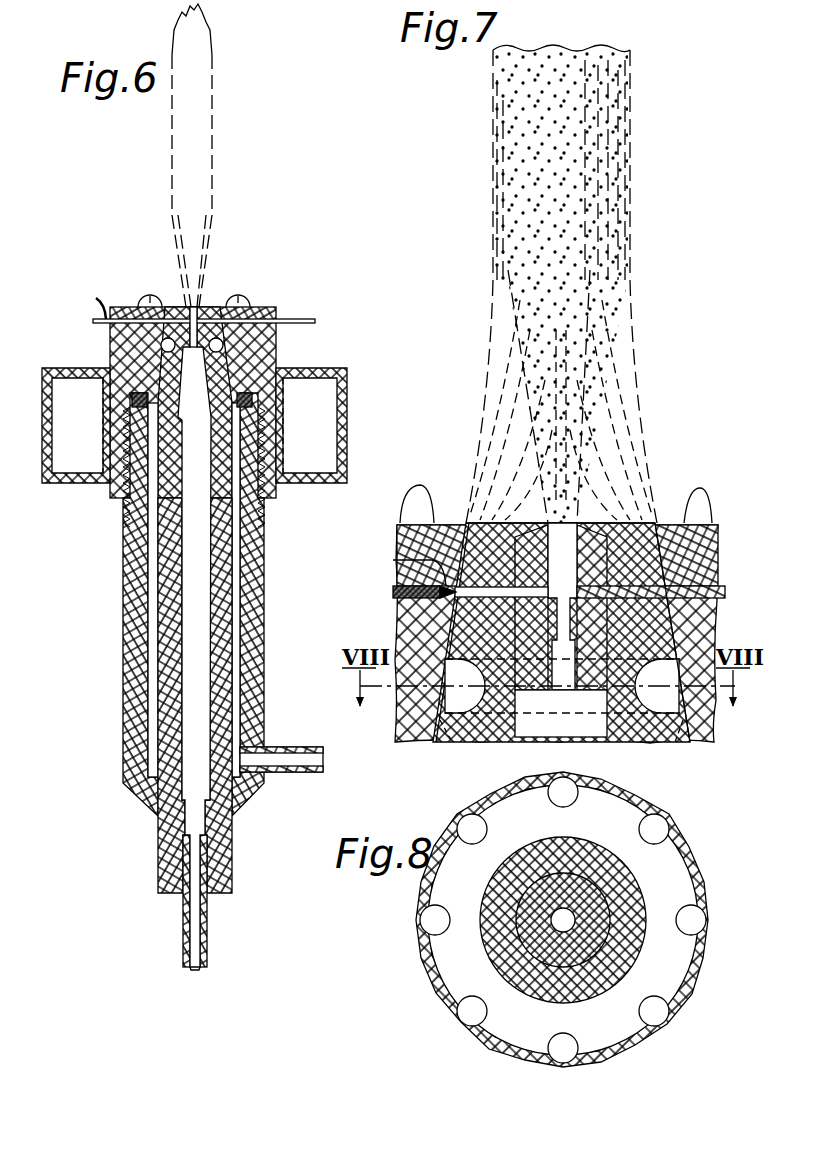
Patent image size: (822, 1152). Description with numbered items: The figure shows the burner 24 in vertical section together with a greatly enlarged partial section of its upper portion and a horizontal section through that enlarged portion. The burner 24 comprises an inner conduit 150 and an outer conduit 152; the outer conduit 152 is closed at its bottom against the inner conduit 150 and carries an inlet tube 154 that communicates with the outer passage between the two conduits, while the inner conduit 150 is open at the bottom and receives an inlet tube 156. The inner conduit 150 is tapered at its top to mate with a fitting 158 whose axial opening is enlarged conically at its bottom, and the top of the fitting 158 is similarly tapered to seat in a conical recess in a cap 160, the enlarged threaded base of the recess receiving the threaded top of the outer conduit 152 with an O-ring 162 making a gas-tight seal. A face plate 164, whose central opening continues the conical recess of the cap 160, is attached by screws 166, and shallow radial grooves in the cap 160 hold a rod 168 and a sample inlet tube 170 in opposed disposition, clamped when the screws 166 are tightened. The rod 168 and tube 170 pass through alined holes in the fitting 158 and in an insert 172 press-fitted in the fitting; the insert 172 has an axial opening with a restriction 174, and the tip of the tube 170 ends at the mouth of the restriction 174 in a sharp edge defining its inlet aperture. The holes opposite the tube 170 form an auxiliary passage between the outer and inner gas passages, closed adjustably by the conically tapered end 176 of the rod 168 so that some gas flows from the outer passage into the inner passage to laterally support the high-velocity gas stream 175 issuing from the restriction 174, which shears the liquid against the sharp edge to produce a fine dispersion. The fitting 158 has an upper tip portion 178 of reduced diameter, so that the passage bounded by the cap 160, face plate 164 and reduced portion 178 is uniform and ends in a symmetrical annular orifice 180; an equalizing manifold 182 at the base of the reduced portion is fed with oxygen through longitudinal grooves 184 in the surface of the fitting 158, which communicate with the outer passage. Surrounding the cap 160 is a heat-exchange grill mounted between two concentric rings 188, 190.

In FIG. 6, the burner 24 is at (348, 352).
In FIG. 6, the inner conduit 150 is at (225, 672).
In FIG. 6, the outer conduit 152 is at (264, 625).
In FIG. 6, the inlet tube 154 is at (300, 771).
In FIG. 6, the inlet tube 156 is at (207, 935).
In FIG. 6, the fitting 158 is at (222, 375).
In FIG. 7, the fitting 158 is at (462, 737).
In FIG. 8, the fitting 158 is at (637, 895).
In FIG. 6, the cap 160 is at (112, 342).
In FIG. 7, the cap 160 is at (402, 645).
In FIG. 8, the cap 160 is at (688, 849).
In FIG. 6, the O-ring 162 is at (135, 395).
In FIG. 6, the face plate 164 is at (260, 307).
In FIG. 7, the face plate 164 is at (407, 548).
In FIG. 6, the screws 166 is at (148, 296).
In FIG. 7, the screws 166 is at (413, 497).
In FIG. 6, the rod 168 is at (96, 301).
In FIG. 7, the rod 168 is at (393, 590).
In FIG. 6, the sample inlet tube 170 is at (306, 319).
In FIG. 7, the sample inlet tube 170 is at (706, 587).
In FIG. 6, the insert 172 is at (202, 330).
In FIG. 7, the insert 172 is at (530, 677).
In FIG. 8, the insert 172 is at (520, 907).
In FIG. 7, the restriction 174 is at (561, 647).
In FIG. 7, the jet 175 is at (578, 535).
In FIG. 7, the conically tapered end 176 is at (428, 564).
In FIG. 7, the upper tip portion 178 is at (458, 622).
In FIG. 7, the annular orifice 180 is at (658, 522).
In FIG. 7, the equalizing manifold 182 is at (445, 700).
In FIG. 8, the equalizing manifold 182 is at (452, 963).
In FIG. 7, the longitudinal grooves 184 is at (432, 738).
In FIG. 8, the longitudinal grooves 184 is at (642, 821).
In FIG. 6, the concentric ring 188 is at (282, 478).
In FIG. 6, the concentric ring 190 is at (348, 426).